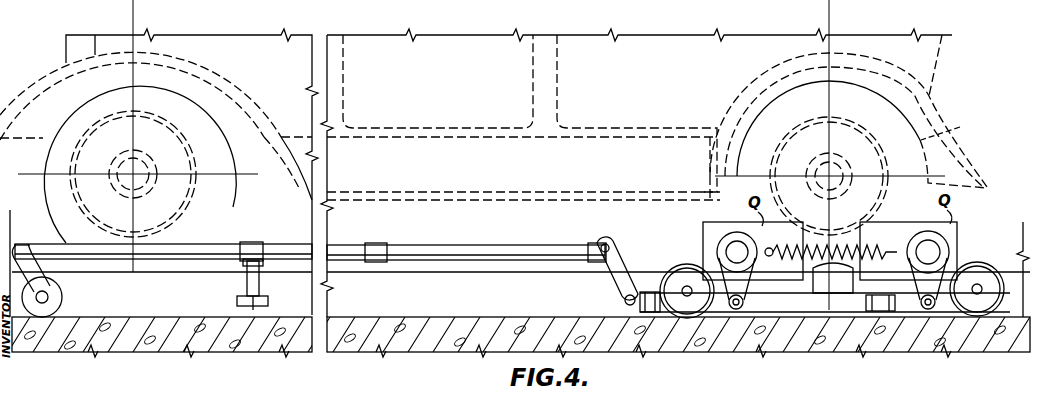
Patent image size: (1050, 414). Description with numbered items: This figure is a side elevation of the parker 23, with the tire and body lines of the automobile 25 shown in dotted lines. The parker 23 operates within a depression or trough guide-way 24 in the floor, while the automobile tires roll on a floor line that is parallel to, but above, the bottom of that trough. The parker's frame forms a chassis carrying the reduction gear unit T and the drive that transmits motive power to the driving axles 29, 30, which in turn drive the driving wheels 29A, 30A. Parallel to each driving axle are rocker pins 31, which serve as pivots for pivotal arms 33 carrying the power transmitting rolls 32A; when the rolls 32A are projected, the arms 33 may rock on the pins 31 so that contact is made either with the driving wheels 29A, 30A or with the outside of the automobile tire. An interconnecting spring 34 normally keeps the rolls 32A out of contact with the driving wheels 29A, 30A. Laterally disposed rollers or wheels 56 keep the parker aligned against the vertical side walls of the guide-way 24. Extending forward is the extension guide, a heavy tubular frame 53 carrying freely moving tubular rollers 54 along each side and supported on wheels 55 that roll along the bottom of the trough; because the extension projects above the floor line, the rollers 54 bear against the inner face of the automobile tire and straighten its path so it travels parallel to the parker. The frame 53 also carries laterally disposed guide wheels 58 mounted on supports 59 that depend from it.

The parker 23 is at (658, 229).
The guide-way 24 is at (122, 318).
The automobile 25 is at (40, 200).
The driving axle 29 is at (979, 287).
The driving wheel 29A is at (988, 265).
The driving axle 30 is at (684, 289).
The driving wheel 30A is at (672, 264).
The rocker pin 31 is at (738, 308).
The power transmitting roll 32A is at (727, 245).
The pivotal arm 33 is at (722, 252).
The interconnecting spring 34 is at (822, 248).
The tubular frame 53 is at (347, 245).
The tubular roller 54 is at (282, 252).
The wheel 55 is at (62, 297).
The laterally disposed roller 56 is at (864, 304).
The guide wheel 58 is at (237, 302).
The support 59 is at (247, 286).
The reduction gear unit T is at (833, 278).